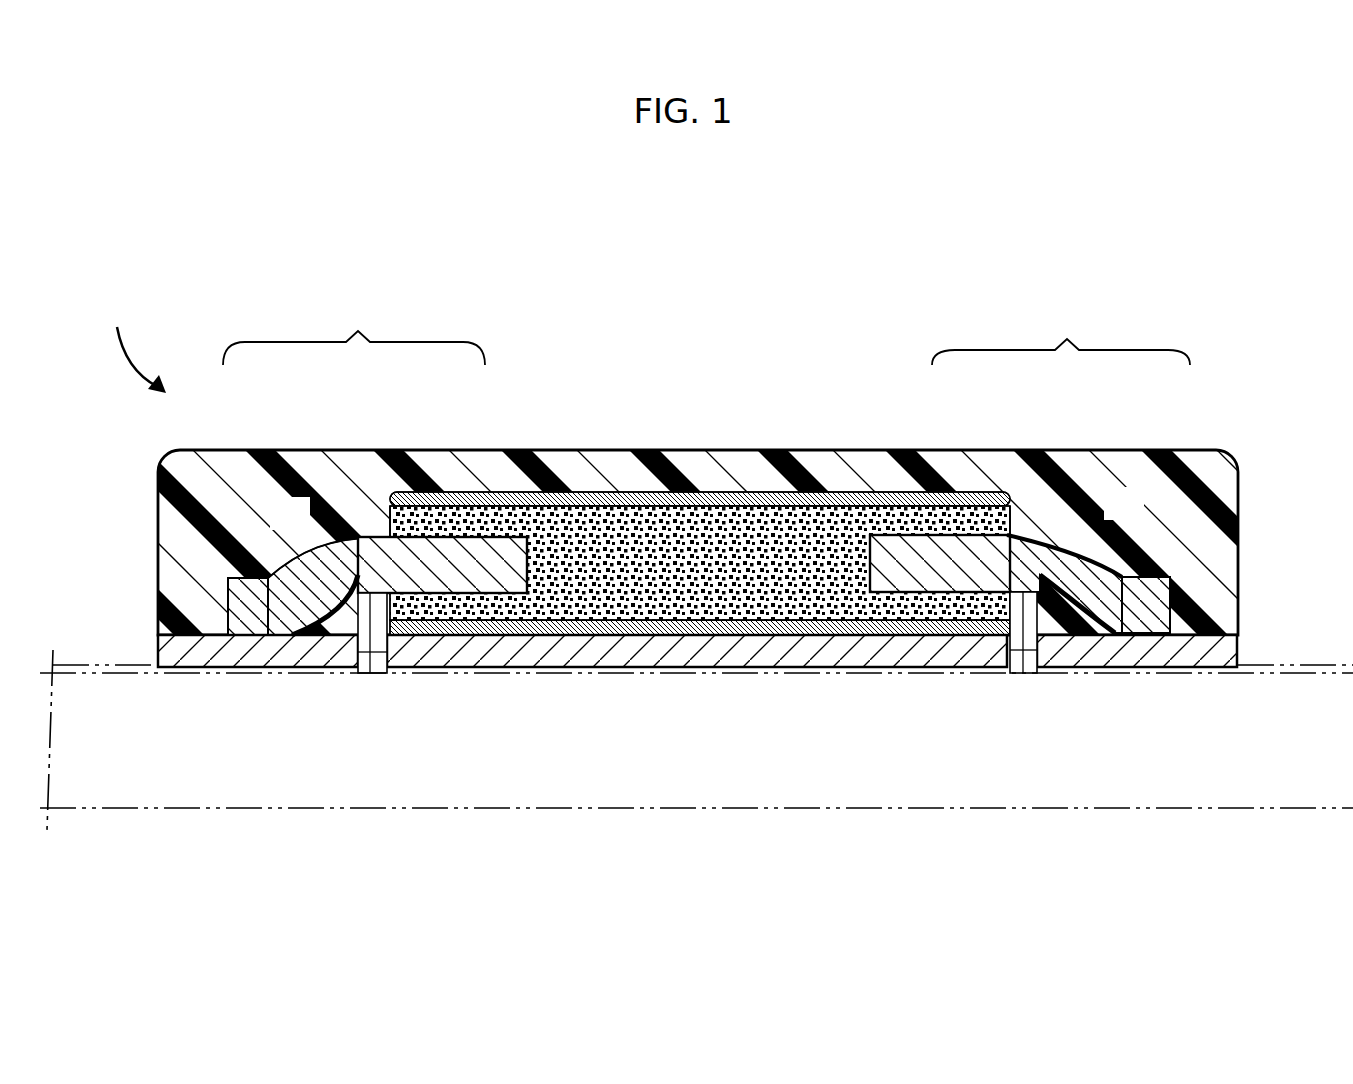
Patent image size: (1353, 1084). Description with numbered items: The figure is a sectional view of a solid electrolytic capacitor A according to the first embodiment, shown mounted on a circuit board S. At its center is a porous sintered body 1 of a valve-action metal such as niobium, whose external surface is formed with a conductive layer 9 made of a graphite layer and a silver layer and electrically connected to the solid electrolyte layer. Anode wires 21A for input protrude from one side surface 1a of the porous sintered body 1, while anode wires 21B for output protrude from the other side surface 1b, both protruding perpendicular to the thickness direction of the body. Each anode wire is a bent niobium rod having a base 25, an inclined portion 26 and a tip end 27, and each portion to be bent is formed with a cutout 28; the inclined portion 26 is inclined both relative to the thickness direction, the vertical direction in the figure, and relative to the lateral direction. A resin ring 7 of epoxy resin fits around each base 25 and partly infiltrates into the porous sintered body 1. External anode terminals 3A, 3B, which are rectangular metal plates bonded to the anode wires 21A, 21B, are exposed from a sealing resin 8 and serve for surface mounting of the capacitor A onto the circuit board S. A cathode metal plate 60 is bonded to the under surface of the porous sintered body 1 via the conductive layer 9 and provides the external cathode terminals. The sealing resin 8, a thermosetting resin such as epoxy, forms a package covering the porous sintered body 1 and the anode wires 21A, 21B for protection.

The porous sintered body 1 is at (612, 547).
The side surface 1a is at (395, 500).
The another side surface 1b is at (1035, 500).
The external anode terminal 3A is at (217, 650).
The external anode terminal 3B is at (1123, 650).
The resin ring 7 is at (360, 585).
The sealing resin 8 is at (708, 470).
The conductive layer 9 is at (810, 498).
The anode wire 21A is at (354, 323).
The anode wire 21B is at (1061, 328).
The base 25 is at (378, 563).
The inclined portion 26 is at (322, 572).
The tip end 27 is at (256, 595).
The cutout 28 is at (282, 593).
The cathode metal plate 60 is at (657, 653).
The solid electrolytic capacitor A is at (128, 339).
The circuit board S is at (1297, 808).